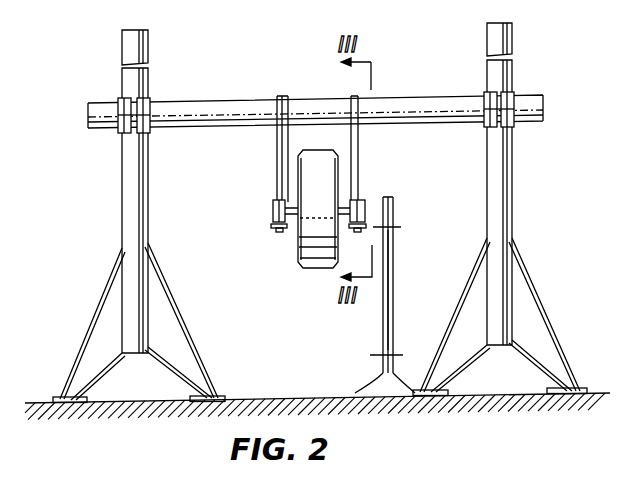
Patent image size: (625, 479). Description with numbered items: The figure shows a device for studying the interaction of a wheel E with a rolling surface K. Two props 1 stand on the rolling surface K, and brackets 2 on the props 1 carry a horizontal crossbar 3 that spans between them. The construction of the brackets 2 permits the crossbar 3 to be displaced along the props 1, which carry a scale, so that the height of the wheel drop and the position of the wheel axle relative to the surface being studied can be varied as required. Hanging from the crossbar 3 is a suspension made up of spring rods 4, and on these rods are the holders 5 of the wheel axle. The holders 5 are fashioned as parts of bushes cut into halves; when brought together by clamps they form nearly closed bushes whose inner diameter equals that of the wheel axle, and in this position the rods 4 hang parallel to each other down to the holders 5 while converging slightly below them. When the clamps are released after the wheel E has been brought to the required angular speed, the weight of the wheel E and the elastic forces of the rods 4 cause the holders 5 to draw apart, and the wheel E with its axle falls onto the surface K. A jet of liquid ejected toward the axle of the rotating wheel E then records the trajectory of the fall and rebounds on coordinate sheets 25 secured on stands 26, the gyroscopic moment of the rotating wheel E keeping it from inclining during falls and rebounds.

The prop 1 is at (146, 45).
The bracket 2 is at (149, 100).
The crossbar 3 is at (195, 102).
The spring rod 4 is at (280, 100).
The holder 5 is at (273, 218).
The coordinate sheet 25 is at (379, 213).
The stand 26 is at (390, 250).
The wheel E is at (299, 258).
The rolling surface K is at (99, 407).